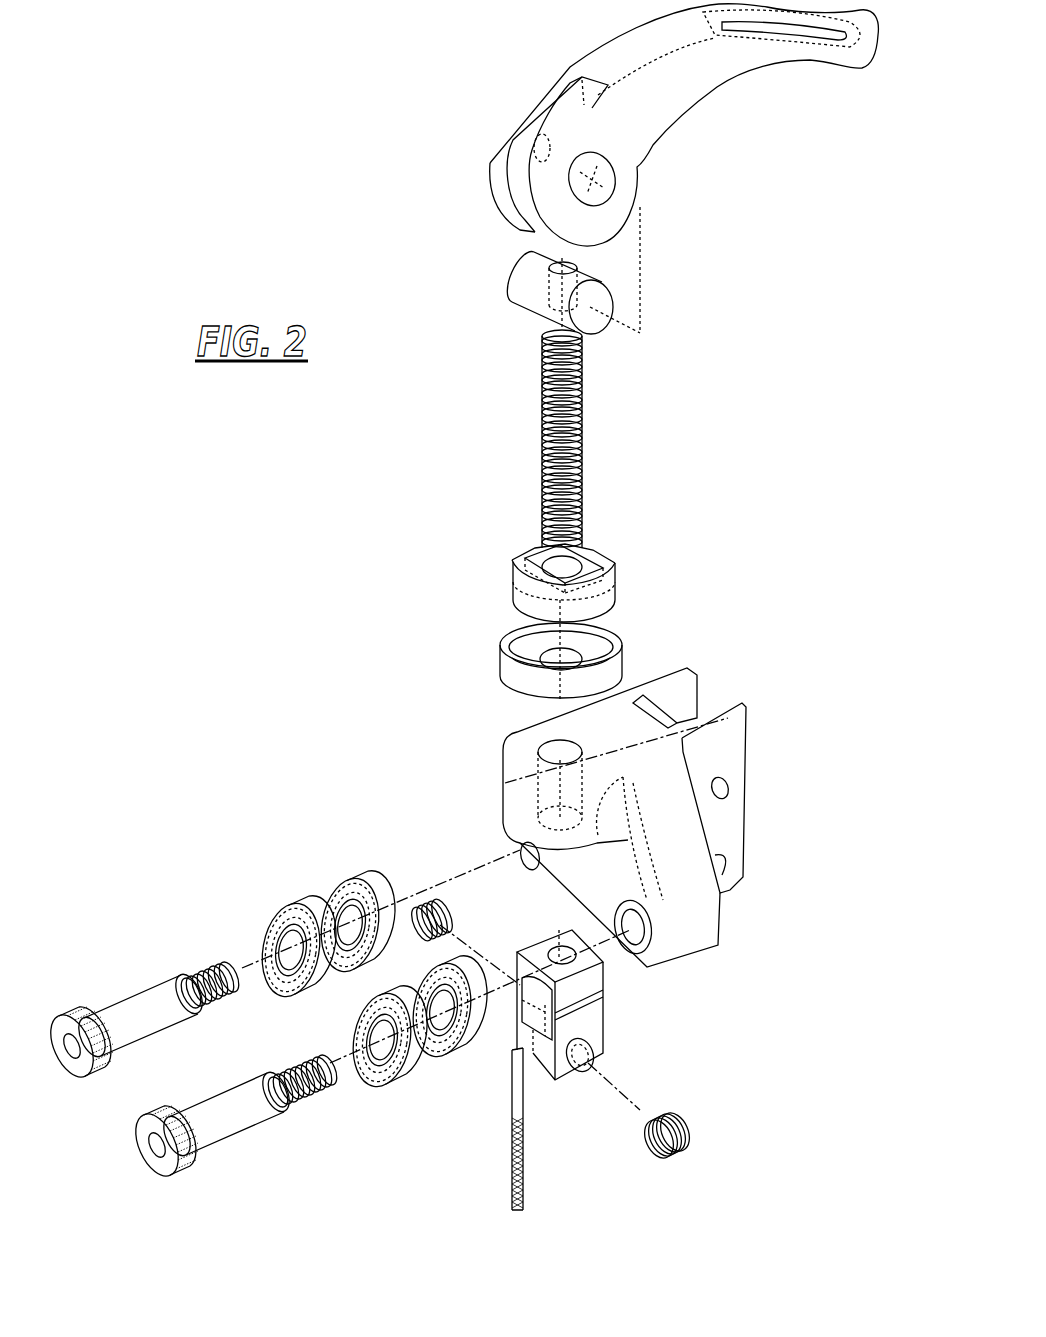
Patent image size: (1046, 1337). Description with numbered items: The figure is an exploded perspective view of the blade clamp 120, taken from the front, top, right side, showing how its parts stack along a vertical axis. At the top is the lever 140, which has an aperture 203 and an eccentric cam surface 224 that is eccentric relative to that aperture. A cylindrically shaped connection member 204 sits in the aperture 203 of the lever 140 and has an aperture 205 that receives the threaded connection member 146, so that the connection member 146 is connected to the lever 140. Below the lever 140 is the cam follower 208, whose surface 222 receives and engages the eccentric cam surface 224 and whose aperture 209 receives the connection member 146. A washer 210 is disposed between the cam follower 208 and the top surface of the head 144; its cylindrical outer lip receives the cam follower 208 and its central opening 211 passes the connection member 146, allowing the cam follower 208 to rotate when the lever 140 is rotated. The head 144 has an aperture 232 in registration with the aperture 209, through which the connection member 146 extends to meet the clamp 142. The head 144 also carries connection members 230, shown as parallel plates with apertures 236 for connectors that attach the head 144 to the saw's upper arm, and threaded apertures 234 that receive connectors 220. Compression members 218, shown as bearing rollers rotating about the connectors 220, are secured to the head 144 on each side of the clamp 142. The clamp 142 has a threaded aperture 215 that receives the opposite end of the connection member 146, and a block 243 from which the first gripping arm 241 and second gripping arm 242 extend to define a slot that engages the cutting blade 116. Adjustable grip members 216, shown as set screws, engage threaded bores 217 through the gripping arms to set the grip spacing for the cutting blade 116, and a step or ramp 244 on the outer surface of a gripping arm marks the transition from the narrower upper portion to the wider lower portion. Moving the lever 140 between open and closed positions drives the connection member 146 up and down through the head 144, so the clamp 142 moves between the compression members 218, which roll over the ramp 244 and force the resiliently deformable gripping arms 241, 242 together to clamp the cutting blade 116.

The blade clamp 120 is at (305, 180).
The lever 140 is at (630, 125).
The aperture 203 is at (612, 177).
The eccentric cam surface 224 is at (595, 247).
The connection member 204 is at (590, 325).
The aperture 205 is at (523, 256).
The connection member 146 is at (583, 440).
The aperture 209 is at (568, 553).
The surface 222 is at (600, 577).
The cam follower 208 is at (600, 598).
The washer 210 is at (608, 665).
The central opening 211 is at (520, 669).
The aperture 232 is at (503, 750).
The connection members 230 is at (730, 747).
The apertures 236 is at (727, 787).
The head 144 is at (707, 930).
The apertures 234 is at (630, 950).
The compression members 218 is at (290, 905).
The adjustable grip members 216 is at (427, 905).
The connectors 220 is at (140, 1005).
The block 243 is at (517, 960).
The aperture 215 is at (560, 950).
The clamp 142 is at (587, 992).
The step or ramp 244 is at (595, 988).
The second gripping arm 242 is at (598, 1045).
The threaded bores 217 is at (580, 1060).
The first gripping arm 241 is at (523, 1035).
The cutting blade 116 is at (523, 1183).